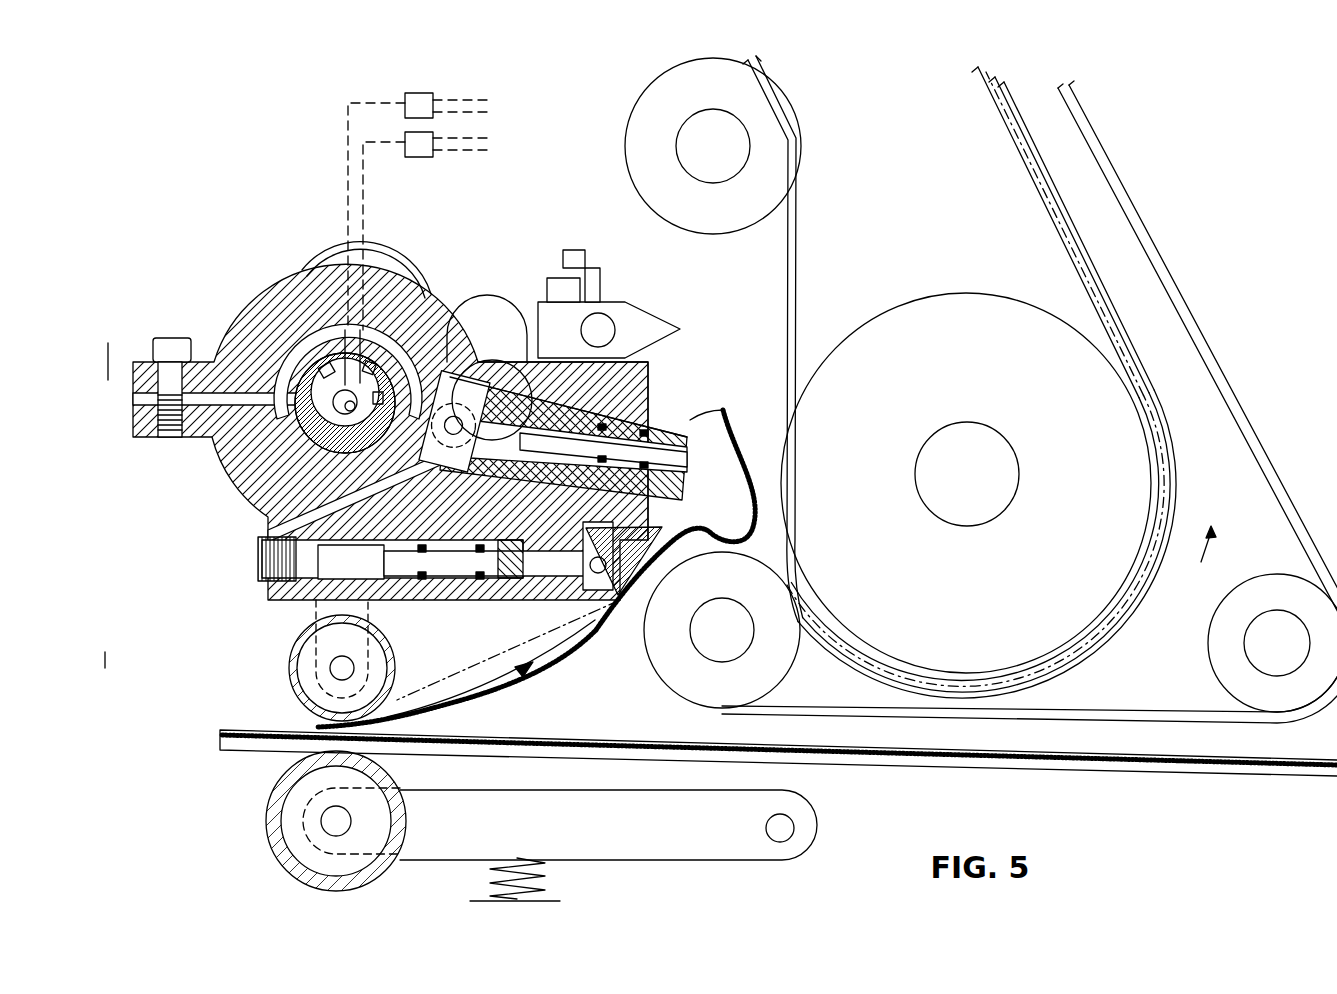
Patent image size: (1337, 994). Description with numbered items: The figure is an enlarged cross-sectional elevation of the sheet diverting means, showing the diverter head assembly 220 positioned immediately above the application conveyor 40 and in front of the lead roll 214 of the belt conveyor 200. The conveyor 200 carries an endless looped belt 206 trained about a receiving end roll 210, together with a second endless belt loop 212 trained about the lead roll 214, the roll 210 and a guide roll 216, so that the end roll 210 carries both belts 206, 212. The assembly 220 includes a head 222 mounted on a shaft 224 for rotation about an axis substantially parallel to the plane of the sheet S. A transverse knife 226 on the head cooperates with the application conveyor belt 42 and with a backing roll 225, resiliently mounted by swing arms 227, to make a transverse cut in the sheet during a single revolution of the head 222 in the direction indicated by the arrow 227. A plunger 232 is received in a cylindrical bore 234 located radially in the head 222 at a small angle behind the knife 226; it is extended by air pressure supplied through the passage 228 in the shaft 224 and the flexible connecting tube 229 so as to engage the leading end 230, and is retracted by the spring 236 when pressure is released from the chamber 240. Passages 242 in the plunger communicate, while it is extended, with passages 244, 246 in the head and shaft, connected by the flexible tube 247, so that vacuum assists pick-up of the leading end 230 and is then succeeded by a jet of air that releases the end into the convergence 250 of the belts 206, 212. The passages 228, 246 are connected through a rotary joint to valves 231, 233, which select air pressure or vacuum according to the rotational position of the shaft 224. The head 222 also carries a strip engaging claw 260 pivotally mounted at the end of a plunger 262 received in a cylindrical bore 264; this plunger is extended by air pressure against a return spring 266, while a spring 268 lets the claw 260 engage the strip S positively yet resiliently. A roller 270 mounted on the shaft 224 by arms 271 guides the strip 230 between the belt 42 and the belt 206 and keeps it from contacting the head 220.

The application conveyor 40 is at (912, 770).
The application conveyor belt 42 is at (1046, 764).
The sheet S is at (1213, 750).
The belt conveyor 200 is at (1165, 232).
The endless looped belt 206 is at (798, 225).
The receiving end roll 210 is at (965, 302).
The second endless belt loop 212 is at (1183, 283).
The lead roll 214 is at (690, 682).
The guide roll 216 is at (1222, 677).
The diverter head assembly 220 is at (442, 389).
The head 222 is at (233, 455).
The shaft 224 is at (303, 395).
The backing roll 225 is at (305, 875).
The transverse knife 226 is at (665, 335).
The swing arms 227 is at (630, 838).
The passage 228 is at (330, 376).
The flexible connecting tube 229 is at (410, 267).
The leading end 230 is at (724, 442).
The valve 231 is at (420, 93).
The plunger 232 is at (698, 422).
The valve 233 is at (428, 157).
The cylindrical bore 234 is at (650, 396).
The spring 236 is at (665, 410).
The chamber 240 is at (448, 490).
The passages 242 is at (512, 475).
The passage 244 is at (556, 388).
The passage 246 is at (333, 418).
The flexible tube 247 is at (492, 296).
The convergence 250 is at (778, 558).
The strip engaging claw 260 is at (628, 552).
The plunger 262 is at (570, 568).
The cylindrical bore 264 is at (366, 582).
The return spring 266 is at (490, 592).
The spring 268 is at (640, 528).
The roller 270 is at (292, 656).
The arms 271 is at (318, 608).